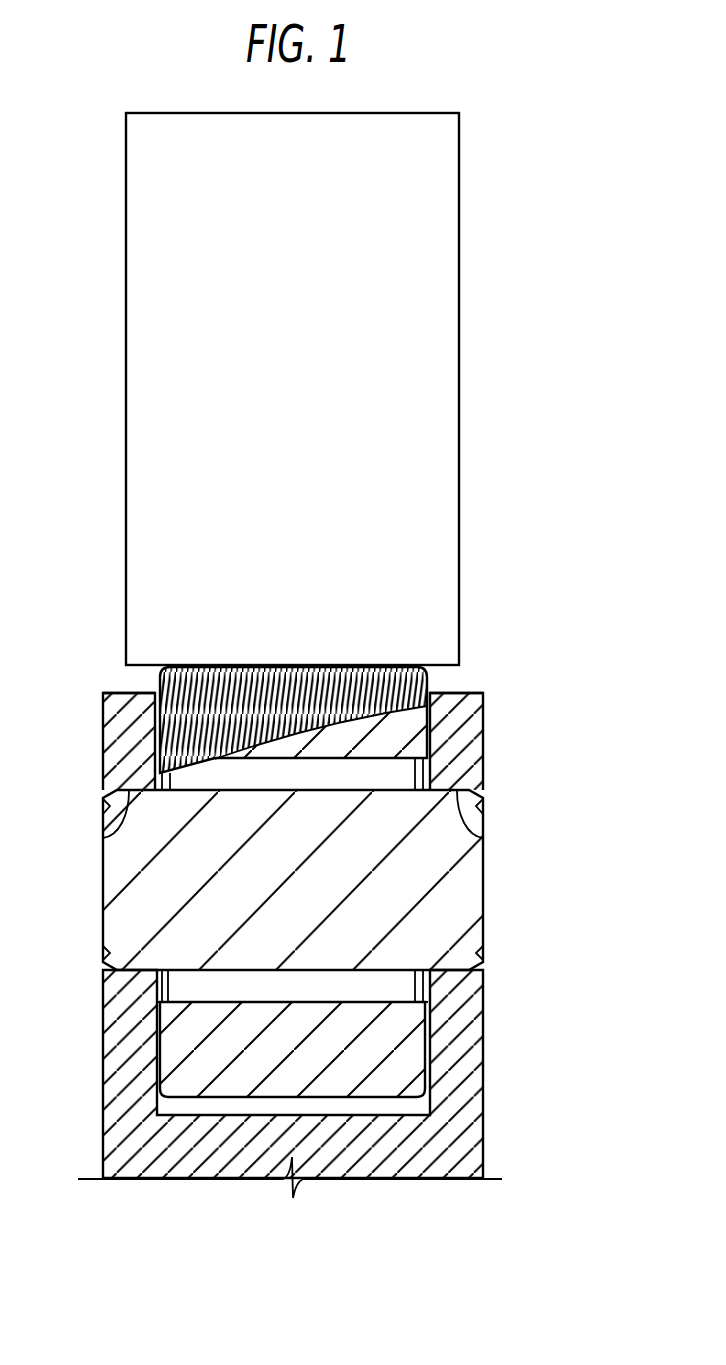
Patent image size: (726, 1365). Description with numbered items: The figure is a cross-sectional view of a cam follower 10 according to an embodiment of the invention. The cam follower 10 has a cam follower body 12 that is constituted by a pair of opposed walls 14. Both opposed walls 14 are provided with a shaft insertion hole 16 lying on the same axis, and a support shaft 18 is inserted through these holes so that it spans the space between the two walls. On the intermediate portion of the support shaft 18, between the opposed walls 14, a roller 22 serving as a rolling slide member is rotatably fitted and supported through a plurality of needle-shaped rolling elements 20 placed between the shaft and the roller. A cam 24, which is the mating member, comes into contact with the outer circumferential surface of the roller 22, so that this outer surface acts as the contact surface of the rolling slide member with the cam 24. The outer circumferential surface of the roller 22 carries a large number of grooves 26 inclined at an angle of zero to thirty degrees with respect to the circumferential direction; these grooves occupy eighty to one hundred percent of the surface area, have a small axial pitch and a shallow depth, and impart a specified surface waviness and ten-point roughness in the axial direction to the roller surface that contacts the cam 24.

The cam follower 10 is at (546, 510).
The cam follower body 12 is at (485, 730).
The opposed walls 14 is at (115, 708).
The shaft insertion hole 16 is at (107, 838).
The support shaft 18 is at (458, 907).
The needle-shaped rolling elements 20 is at (392, 777).
The roller 22 is at (396, 667).
The cam 24 is at (443, 373).
The grooves 26 is at (203, 687).